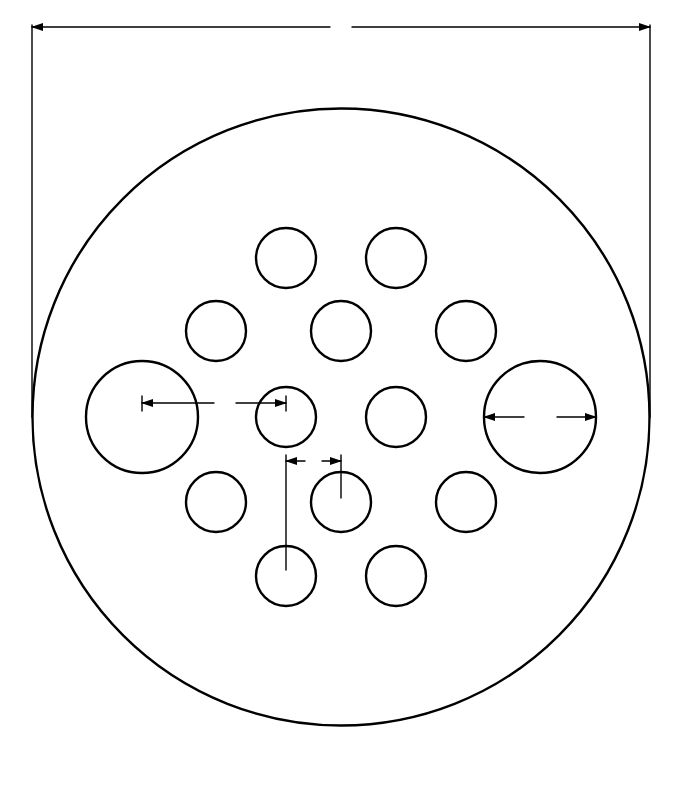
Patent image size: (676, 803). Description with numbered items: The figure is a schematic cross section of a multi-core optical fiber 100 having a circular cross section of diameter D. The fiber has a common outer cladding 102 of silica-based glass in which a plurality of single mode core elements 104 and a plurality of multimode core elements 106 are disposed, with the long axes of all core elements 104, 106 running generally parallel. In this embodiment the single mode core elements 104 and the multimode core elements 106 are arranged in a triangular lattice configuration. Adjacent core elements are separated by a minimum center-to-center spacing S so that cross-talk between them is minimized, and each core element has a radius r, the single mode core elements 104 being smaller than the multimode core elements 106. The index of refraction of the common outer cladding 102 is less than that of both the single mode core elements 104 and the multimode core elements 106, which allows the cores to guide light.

The multi-core optical fiber 100 is at (542, 128).
The common outer cladding 102 is at (556, 199).
The single mode core element 104 is at (288, 228).
The multimode core element 106 is at (142, 361).